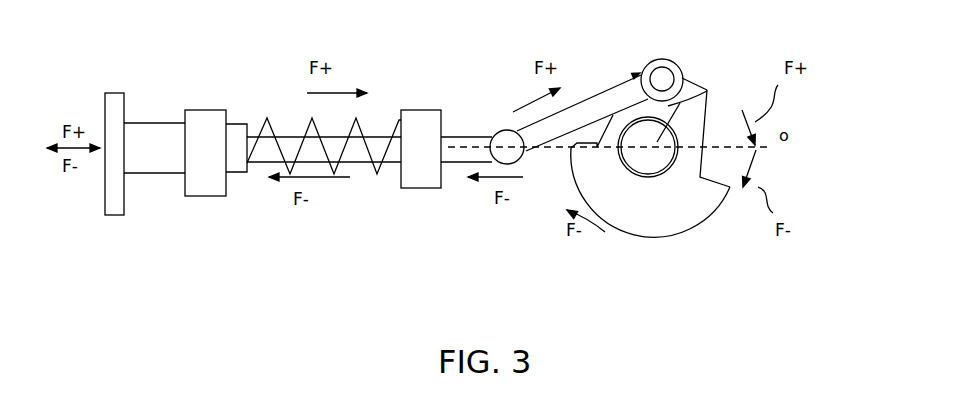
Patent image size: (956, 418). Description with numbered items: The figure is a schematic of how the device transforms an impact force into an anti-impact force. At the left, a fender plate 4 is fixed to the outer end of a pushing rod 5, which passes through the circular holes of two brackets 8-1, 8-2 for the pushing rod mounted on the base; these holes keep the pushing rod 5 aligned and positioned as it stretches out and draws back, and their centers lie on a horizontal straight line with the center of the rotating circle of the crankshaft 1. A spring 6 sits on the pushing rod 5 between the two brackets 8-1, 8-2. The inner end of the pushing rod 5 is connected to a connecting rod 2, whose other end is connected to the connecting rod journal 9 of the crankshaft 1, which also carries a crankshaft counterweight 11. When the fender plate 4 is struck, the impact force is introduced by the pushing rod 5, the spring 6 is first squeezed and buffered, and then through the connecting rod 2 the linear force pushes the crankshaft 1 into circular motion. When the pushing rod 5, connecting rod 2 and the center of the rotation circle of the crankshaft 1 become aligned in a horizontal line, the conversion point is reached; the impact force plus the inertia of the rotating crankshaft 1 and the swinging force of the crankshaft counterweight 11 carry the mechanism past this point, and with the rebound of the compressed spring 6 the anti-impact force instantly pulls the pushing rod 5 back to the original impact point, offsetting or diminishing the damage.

The crankshaft 1 is at (708, 95).
The connecting rod 2 is at (595, 103).
The fender plate 4 is at (118, 97).
The pushing rod 5 is at (160, 178).
The spring 6 is at (376, 177).
The bracket for the pushing rod 8-1 is at (208, 105).
The bracket for the pushing rod 8-2 is at (415, 107).
The connecting rod journal 9 is at (664, 78).
The crankshaft counterweight 11 is at (638, 195).